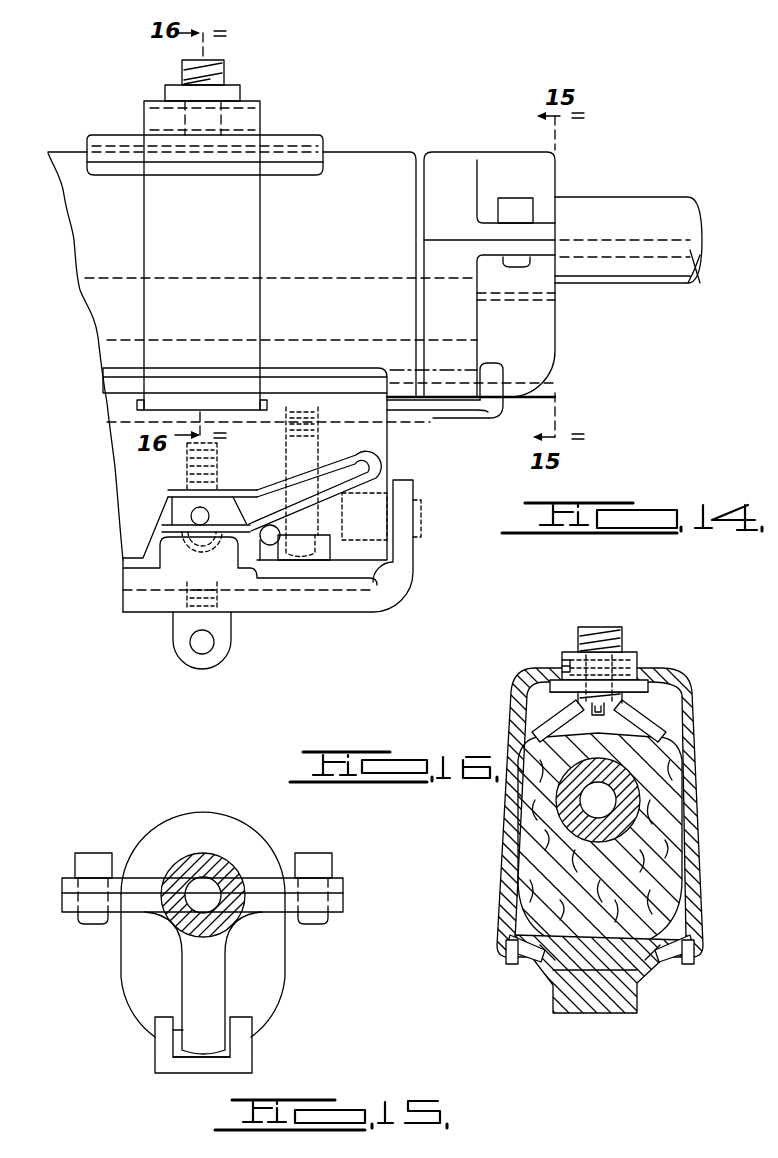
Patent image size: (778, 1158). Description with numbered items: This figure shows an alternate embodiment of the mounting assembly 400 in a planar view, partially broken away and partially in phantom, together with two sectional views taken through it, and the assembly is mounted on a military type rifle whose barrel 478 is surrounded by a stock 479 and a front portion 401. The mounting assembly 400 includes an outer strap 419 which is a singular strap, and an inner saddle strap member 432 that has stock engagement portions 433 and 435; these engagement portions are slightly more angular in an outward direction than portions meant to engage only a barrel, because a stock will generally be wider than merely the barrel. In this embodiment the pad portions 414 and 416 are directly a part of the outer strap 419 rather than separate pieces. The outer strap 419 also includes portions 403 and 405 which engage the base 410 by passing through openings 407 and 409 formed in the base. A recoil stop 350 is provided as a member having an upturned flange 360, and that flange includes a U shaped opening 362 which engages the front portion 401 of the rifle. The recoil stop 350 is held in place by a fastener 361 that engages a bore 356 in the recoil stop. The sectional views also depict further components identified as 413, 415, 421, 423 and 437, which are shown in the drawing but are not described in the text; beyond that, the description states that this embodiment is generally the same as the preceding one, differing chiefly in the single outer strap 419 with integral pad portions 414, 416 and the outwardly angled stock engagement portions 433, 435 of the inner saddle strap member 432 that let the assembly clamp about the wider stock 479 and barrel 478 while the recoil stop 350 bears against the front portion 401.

In FIG. 14, the mounting assembly 400 is at (127, 90).
In FIG. 14, the front portion 401 is at (555, 343).
In FIG. 15, the front portion 401 is at (222, 990).
In FIG. 16, the strap portion 403 is at (537, 963).
In FIG. 16, the strap portion 405 is at (667, 963).
In FIG. 16, the opening 407 is at (663, 955).
In FIG. 16, the opening 409 is at (533, 948).
In FIG. 14, the base 410 is at (395, 467).
In FIG. 16, the base 410 is at (567, 1000).
In FIG. 14, the bolt 413 is at (261, 100).
In FIG. 16, the bolt 413 is at (689, 674).
In FIG. 16, the pad portion 414 is at (677, 932).
In FIG. 16, the nut 415 is at (633, 648).
In FIG. 16, the pad portion 416 is at (530, 932).
In FIG. 14, the outer strap 419 is at (144, 211).
In FIG. 16, the outer strap 419 is at (517, 692).
In FIG. 16, the notch 421 is at (566, 667).
In FIG. 16, the lip 423 is at (570, 665).
In FIG. 14, the inner saddle strap member 432 is at (310, 135).
In FIG. 16, the stock engagement portion 433 is at (597, 625).
In FIG. 16, the stock engagement portion 435 is at (593, 720).
In FIG. 16, the washer 437 is at (660, 722).
In FIG. 14, the barrel 478 is at (637, 210).
In FIG. 15, the barrel 478 is at (193, 860).
In FIG. 16, the stock 479 is at (687, 810).
In FIG. 14, the recoil stop 350 is at (433, 419).
In FIG. 15, the recoil stop 350 is at (252, 1065).
In FIG. 14, the bore 356 is at (307, 400).
In FIG. 14, the upturned flange 360 is at (500, 373).
In FIG. 15, the upturned flange 360 is at (177, 1075).
In FIG. 14, the fastener 361 is at (307, 542).
In FIG. 15, the U shaped opening 362 is at (183, 1029).